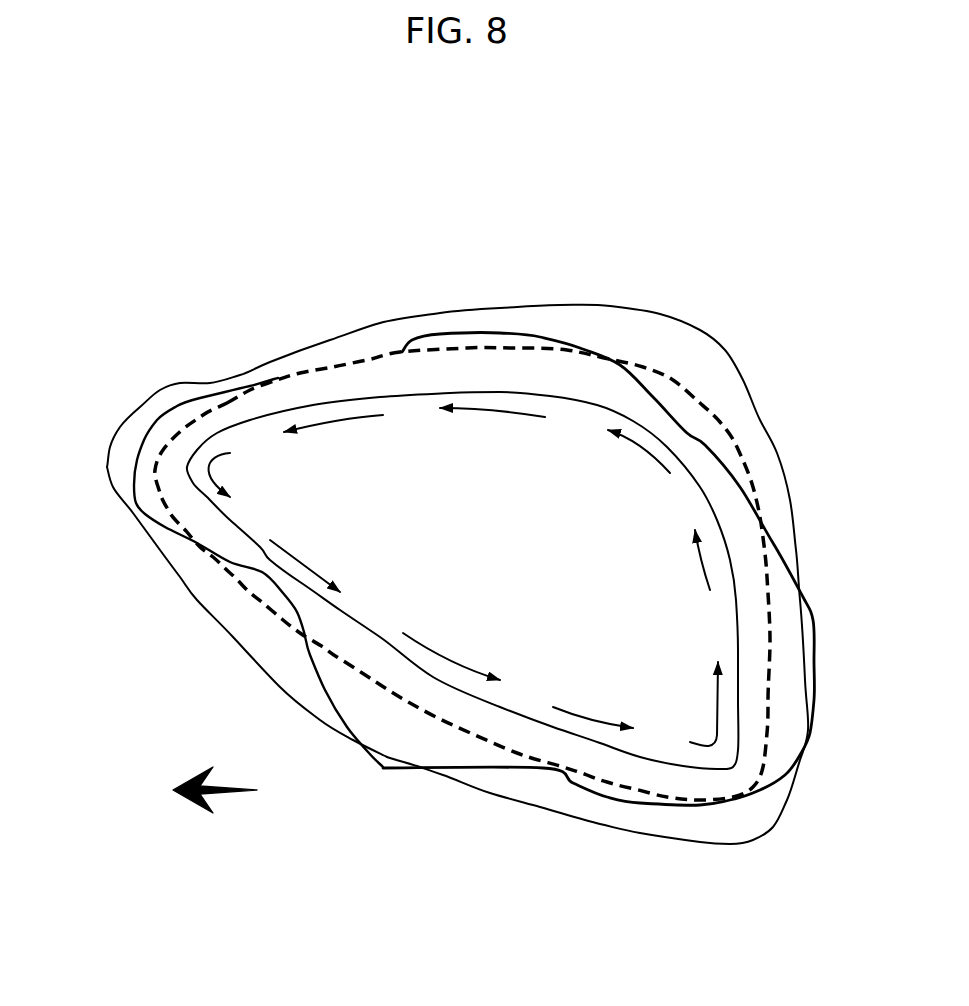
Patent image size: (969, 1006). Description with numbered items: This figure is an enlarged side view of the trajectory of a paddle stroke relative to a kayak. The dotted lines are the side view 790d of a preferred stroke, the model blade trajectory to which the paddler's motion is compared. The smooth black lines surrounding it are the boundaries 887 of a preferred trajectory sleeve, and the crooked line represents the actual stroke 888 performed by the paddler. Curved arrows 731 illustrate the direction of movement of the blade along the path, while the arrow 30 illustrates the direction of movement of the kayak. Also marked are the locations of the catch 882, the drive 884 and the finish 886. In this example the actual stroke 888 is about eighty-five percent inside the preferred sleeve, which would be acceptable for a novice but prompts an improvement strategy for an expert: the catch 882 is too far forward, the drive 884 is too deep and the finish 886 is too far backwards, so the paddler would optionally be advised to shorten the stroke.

The finish 886 is at (471, 578).
The drive 884 is at (247, 612).
The catch 882 is at (205, 572).
The actual stroke 888 is at (477, 768).
The boundaries of a preferred trajectory sleeve 887 is at (677, 319).
The side view of a preferred stroke 790d is at (735, 443).
The curved arrows 731 is at (718, 660).
The arrow 30 is at (213, 770).